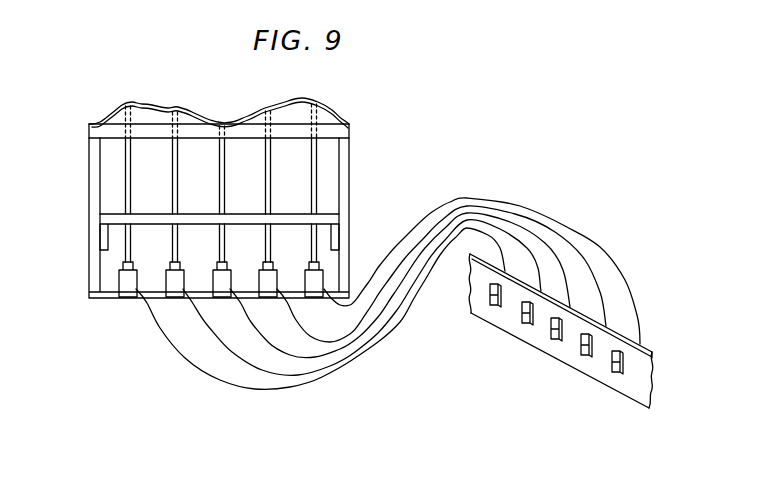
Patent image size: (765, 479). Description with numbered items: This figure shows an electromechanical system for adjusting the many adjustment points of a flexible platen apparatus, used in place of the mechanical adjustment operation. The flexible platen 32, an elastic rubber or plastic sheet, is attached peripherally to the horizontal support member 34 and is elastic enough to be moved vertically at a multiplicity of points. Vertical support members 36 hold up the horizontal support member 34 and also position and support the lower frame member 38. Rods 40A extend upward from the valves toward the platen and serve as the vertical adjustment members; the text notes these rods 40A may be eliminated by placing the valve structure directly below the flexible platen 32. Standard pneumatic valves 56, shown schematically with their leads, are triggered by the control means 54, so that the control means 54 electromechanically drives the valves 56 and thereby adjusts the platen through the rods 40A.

The flexible platen 32 is at (117, 113).
The horizontal support member 34 is at (340, 128).
The vertical support members 36 is at (95, 168).
The lower frame member 38 is at (330, 220).
The rods 40A is at (315, 160).
The control means 54 is at (626, 358).
The pneumatic valves 56 is at (212, 304).